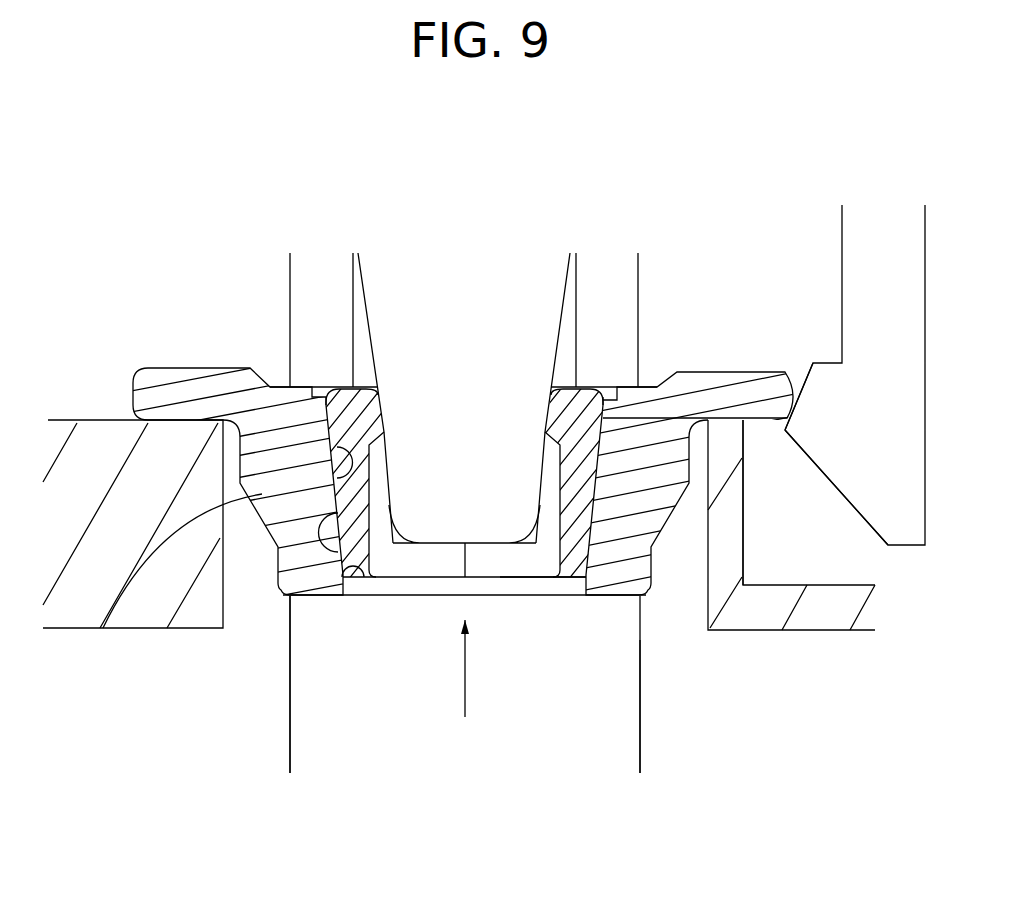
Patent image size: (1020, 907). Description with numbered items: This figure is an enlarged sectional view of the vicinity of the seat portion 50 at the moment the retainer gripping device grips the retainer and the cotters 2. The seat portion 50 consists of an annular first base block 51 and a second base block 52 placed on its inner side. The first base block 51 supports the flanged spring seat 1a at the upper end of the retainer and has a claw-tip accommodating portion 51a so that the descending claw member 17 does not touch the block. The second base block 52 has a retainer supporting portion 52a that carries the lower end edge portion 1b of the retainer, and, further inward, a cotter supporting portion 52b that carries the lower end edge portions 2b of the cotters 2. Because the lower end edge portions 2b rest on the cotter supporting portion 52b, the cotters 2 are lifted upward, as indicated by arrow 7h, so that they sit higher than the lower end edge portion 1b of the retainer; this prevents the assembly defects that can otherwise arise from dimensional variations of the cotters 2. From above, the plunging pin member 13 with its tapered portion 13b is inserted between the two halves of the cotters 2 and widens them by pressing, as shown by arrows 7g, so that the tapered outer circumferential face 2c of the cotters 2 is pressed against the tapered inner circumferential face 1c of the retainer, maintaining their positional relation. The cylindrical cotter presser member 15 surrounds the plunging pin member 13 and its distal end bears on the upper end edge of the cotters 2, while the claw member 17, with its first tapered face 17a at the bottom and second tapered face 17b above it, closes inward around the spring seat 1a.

The flanged spring seat 1a is at (173, 368).
The lower end edge portion 1b is at (292, 618).
The inner circumferential face 1c is at (143, 570).
The cotters 2 is at (597, 388).
The lower end edge portions 2b is at (418, 578).
The outer circumferential face 2c is at (358, 577).
The arrow 7g is at (442, 392).
The arrow 7h is at (465, 688).
The plunging pin member 13 is at (573, 268).
The tapered portion 13b is at (561, 332).
The cotter presser member 15 is at (290, 278).
The claw member 17 is at (842, 222).
The first tapered face 17a is at (828, 478).
The second tapered face 17b is at (797, 400).
The seat portion 50 is at (742, 686).
The first base block 51 is at (86, 420).
The claw-tip accommodating portion 51a is at (745, 566).
The second base block 52 is at (640, 733).
The retainer supporting portion 52a is at (331, 596).
The cotter supporting portion 52b is at (534, 574).